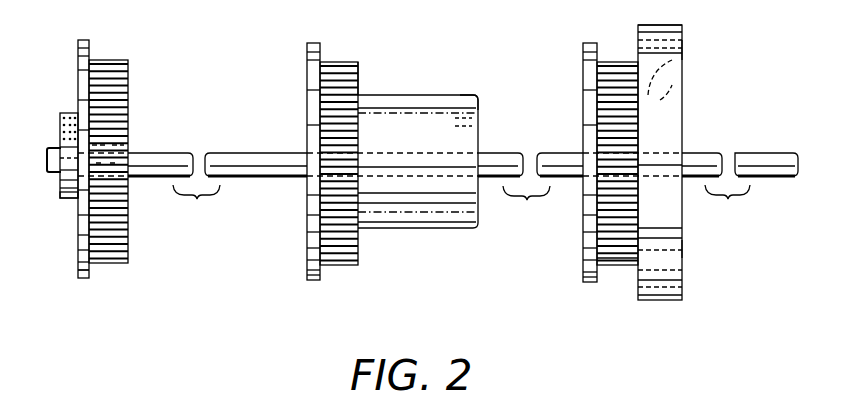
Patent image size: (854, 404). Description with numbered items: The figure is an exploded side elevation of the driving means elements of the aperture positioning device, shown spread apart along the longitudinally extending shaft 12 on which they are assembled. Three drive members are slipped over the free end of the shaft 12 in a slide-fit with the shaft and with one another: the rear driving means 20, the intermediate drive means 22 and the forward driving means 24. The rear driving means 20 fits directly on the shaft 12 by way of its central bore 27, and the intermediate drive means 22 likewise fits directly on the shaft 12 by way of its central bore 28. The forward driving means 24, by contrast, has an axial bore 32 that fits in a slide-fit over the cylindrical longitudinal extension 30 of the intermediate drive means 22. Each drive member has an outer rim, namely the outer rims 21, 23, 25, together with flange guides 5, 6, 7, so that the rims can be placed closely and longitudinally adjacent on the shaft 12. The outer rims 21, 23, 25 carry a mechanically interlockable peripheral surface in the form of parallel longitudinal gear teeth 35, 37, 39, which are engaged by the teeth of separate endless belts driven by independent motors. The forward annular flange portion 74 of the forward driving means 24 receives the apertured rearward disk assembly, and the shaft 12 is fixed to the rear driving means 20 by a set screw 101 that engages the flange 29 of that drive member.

The flange guide 5 is at (82, 280).
The flange guide 6 is at (313, 282).
The flange guide 7 is at (592, 283).
The longitudinally extending shaft 12 is at (49, 170).
The rear driving means 20 is at (133, 161).
The outer rim 21 is at (109, 59).
The intermediate drive means 22 is at (543, 177).
The outer rim 23 is at (343, 62).
The forward driving means 24 is at (667, 191).
The outer rim 25 is at (617, 62).
The central bore 27 is at (101, 147).
The central bore 28 is at (413, 148).
The flange 29 is at (68, 205).
The cylindrical longitudinal extension 30 is at (467, 95).
The axial bore 32 is at (683, 51).
The gear teeth 35 is at (128, 81).
The gear teeth 37 is at (358, 78).
The gear teeth 39 is at (627, 258).
The forward annular flange portion 74 is at (650, 25).
The set screw 101 is at (75, 112).